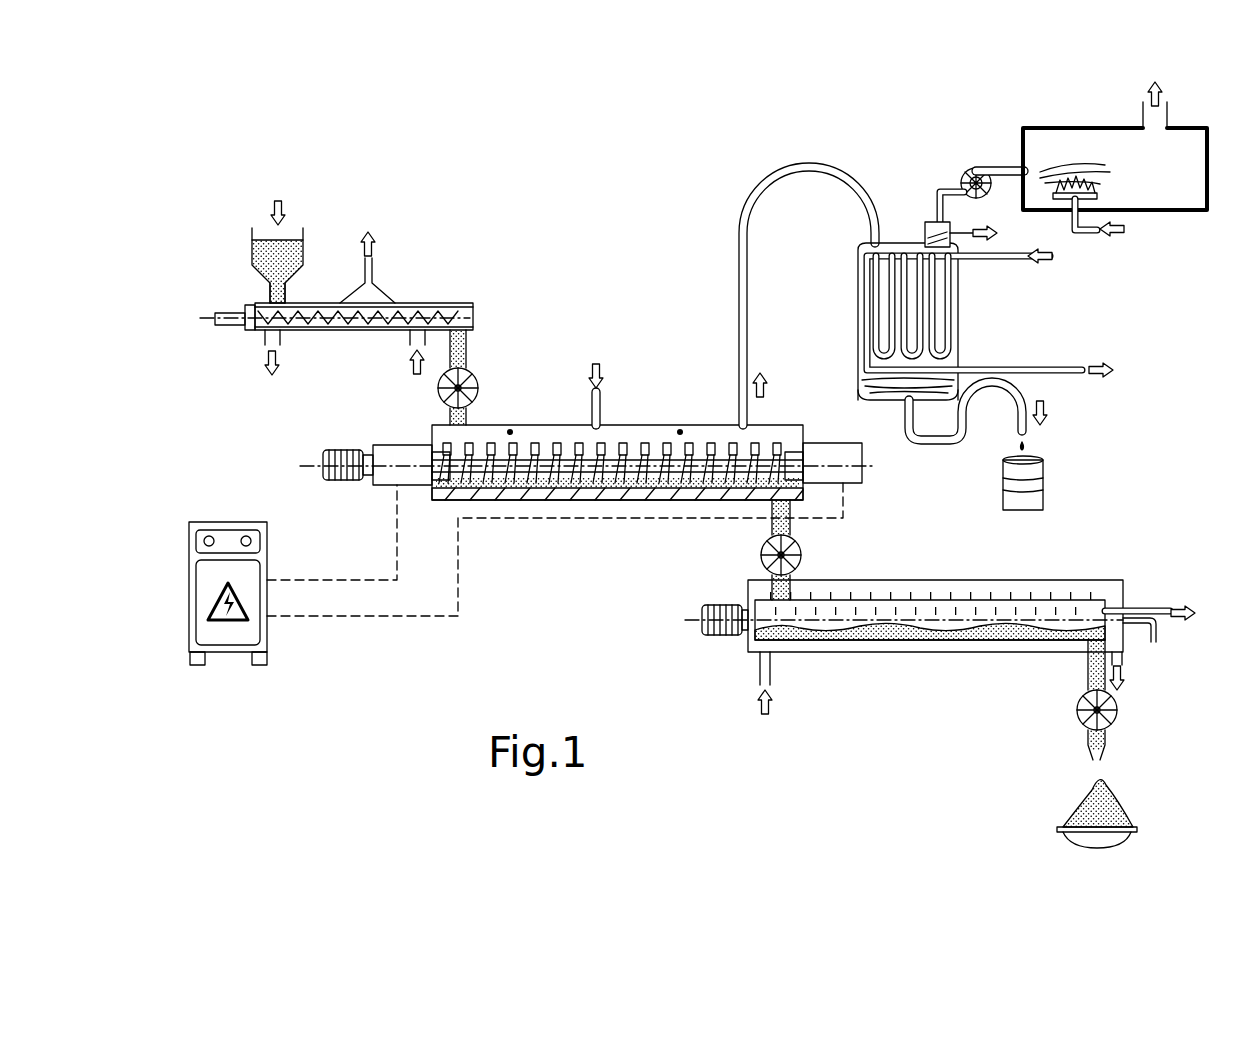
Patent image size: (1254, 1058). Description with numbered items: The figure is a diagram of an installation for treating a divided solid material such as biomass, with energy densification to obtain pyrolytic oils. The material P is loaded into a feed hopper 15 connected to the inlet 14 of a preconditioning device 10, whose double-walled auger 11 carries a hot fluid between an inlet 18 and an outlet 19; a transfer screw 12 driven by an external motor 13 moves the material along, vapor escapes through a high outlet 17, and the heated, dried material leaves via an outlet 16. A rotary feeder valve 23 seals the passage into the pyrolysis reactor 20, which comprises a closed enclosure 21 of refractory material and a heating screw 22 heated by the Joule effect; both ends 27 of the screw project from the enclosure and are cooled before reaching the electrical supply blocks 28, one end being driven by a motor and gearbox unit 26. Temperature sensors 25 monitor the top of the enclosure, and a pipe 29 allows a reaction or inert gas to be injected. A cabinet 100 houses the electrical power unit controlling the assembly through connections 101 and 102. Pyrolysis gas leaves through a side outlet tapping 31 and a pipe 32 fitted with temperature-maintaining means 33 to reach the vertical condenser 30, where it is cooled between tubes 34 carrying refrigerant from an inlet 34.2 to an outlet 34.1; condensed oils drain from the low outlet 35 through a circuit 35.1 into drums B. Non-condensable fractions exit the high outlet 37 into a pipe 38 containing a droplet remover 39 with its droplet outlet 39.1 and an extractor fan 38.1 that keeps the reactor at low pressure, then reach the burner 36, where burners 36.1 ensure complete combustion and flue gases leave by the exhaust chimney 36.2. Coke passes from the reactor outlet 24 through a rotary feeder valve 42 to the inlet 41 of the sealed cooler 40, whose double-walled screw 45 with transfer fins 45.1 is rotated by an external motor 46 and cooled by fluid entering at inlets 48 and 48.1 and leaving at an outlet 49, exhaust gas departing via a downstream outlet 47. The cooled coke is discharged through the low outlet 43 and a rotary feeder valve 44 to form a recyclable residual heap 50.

The material for treatment P is at (262, 216).
The preconditioning device 10 is at (350, 292).
The double-walled auger 11 is at (318, 331).
The transfer screw 12 is at (363, 326).
The external motor 13 is at (225, 322).
The inlet 14 is at (268, 297).
The feed hopper 15 is at (250, 252).
The outlet 16 is at (468, 345).
The vapor outlet 17 is at (378, 290).
The hot fluid inlet 18 is at (412, 338).
The hot fluid outlet 19 is at (265, 338).
The pyrolysis reactor 20 is at (587, 433).
The closed enclosure 21 is at (565, 500).
The heating screw 22 is at (592, 410).
The rotary feeder valve 23 is at (438, 390).
The outlet 24 is at (795, 522).
The temperature sensors 25 is at (510, 430).
The motor and gearbox unit 26 is at (340, 455).
The ends of the heating screw 27 is at (432, 442).
The electrical power supply connection blocks 28 is at (385, 485).
The gas injection pipe 29 is at (603, 392).
The vertical condenser 30 is at (949, 321).
The outlet tapping 31 is at (750, 415).
The pipe 32 is at (749, 252).
The temperature-maintaining means 33 is at (738, 268).
The tubes 34 is at (952, 340).
The refrigerant fluid outlet 34.1 is at (1080, 367).
The refrigerant fluid inlet 34.2 is at (1000, 260).
The low outlet 35 is at (904, 418).
The oil recovery circuit 35.1 is at (936, 444).
The drums B is at (1043, 470).
The burner 36 is at (1136, 156).
The burners 36.1 is at (1100, 196).
The exhaust chimney 36.2 is at (1172, 108).
The high outlet 37 is at (926, 243).
The pipe 38 is at (960, 180).
The extractor fan 38.1 is at (975, 168).
The droplet remover 39 is at (936, 206).
The droplet outlet 39.1 is at (968, 225).
The sealed cooler 40 is at (961, 662).
The inlet 41 is at (770, 590).
The rotary feeder valve 42 is at (802, 555).
The low outlet 43 is at (1086, 668).
The rotary feeder valve 44 is at (1118, 712).
The double-walled screw 45 is at (1060, 580).
The transfer fins 45.1 is at (905, 600).
The external motor 46 is at (717, 636).
The downstream outlet 47 is at (1165, 608).
The cooling fluid inlet 48 is at (772, 668).
The cooling fluid inlet 48.1 is at (1160, 640).
The cooling fluid outlet 49 is at (1125, 662).
The residual heap 50 is at (1125, 806).
The cabinet 100 is at (185, 574).
The connection 101 is at (320, 580).
The connection 102 is at (335, 616).